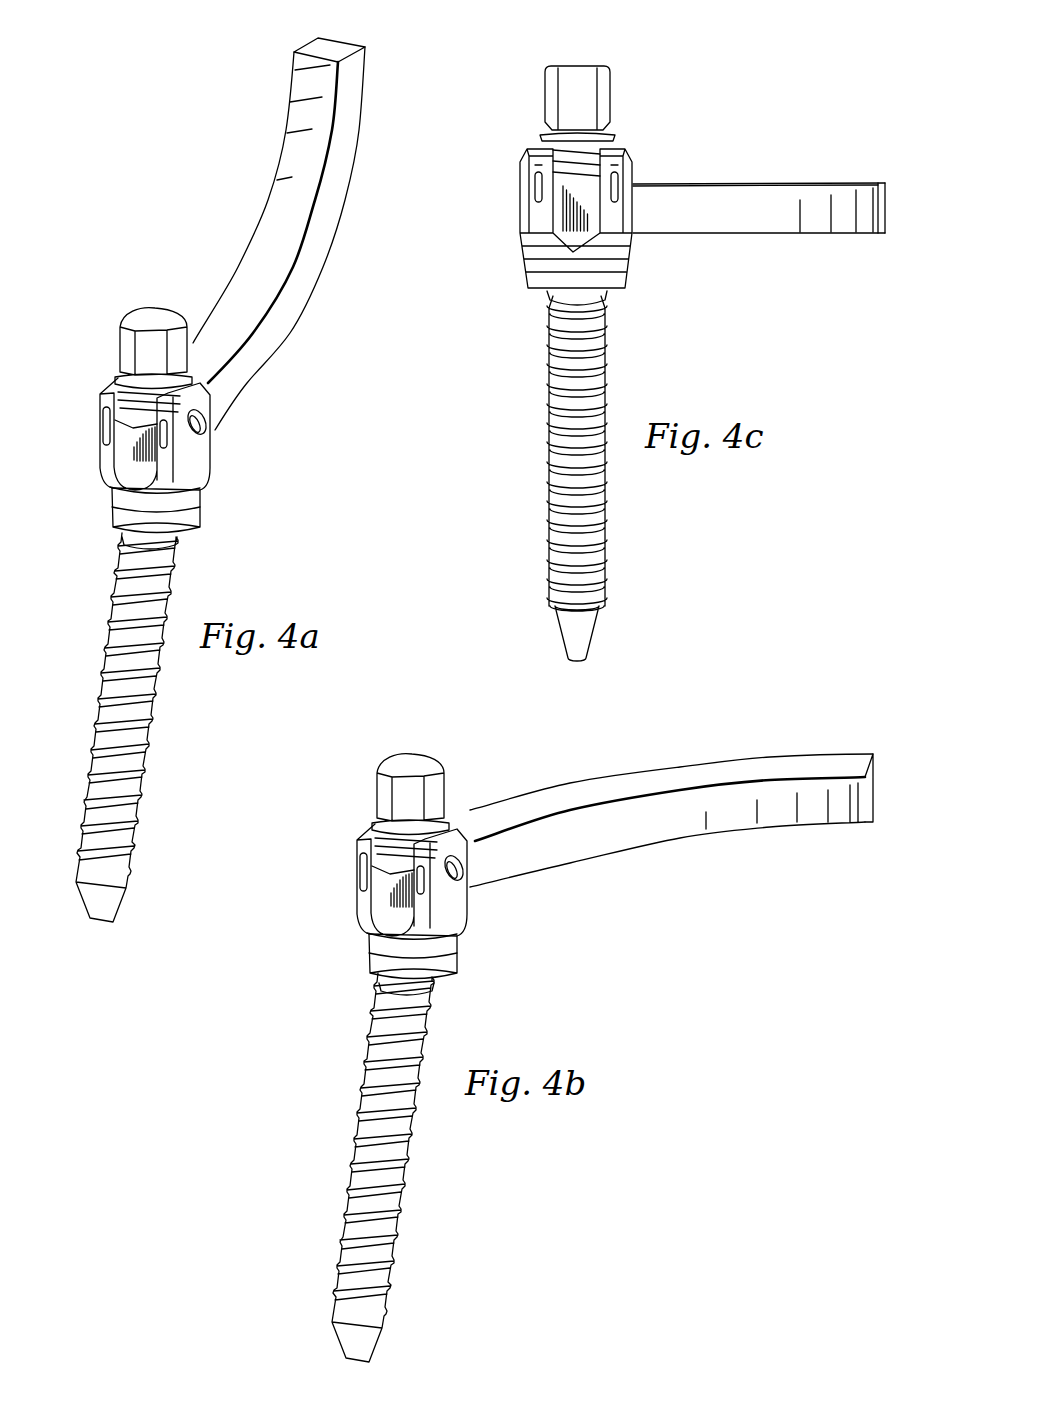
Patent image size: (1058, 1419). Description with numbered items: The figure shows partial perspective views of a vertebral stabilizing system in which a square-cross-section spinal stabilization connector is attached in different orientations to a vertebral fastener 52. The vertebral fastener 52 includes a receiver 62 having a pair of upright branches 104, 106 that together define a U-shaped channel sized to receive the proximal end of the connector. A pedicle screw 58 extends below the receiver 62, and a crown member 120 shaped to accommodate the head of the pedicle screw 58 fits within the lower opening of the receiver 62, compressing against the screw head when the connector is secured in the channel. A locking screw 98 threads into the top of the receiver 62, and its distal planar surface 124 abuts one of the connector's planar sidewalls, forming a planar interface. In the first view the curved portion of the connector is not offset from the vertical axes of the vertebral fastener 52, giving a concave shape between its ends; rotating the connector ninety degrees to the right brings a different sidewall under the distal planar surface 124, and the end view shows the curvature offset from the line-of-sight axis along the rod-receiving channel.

In FIG. 4C, the vertebral fastener 52 is at (652, 147).
In FIG. 4B, the vertebral fastener 52 is at (479, 778).
In FIG. 4A, the pedicle screw 58 is at (141, 814).
In FIG. 4C, the pedicle screw 58 is at (615, 553).
In FIG. 4B, the pedicle screw 58 is at (399, 1260).
In FIG. 4A, the receiver 62 is at (101, 389).
In FIG. 4C, the receiver 62 is at (519, 148).
In FIG. 4B, the receiver 62 is at (356, 828).
In FIG. 4A, the locking screw 98 is at (150, 312).
In FIG. 4C, the locking screw 98 is at (582, 64).
In FIG. 4B, the locking screw 98 is at (405, 763).
In FIG. 4A, the upright branch 104 is at (100, 458).
In FIG. 4C, the upright branch 104 is at (540, 218).
In FIG. 4B, the upright branch 104 is at (360, 904).
In FIG. 4A, the upright branch 106 is at (197, 462).
In FIG. 4C, the upright branch 106 is at (620, 250).
In FIG. 4B, the upright branch 106 is at (458, 909).
In FIG. 4A, the crown member 120 is at (197, 513).
In FIG. 4C, the crown member 120 is at (572, 247).
In FIG. 4B, the crown member 120 is at (452, 960).
In FIG. 4A, the distal planar surface 124 is at (182, 445).
In FIG. 4C, the distal planar surface 124 is at (537, 178).
In FIG. 4B, the distal planar surface 124 is at (470, 889).